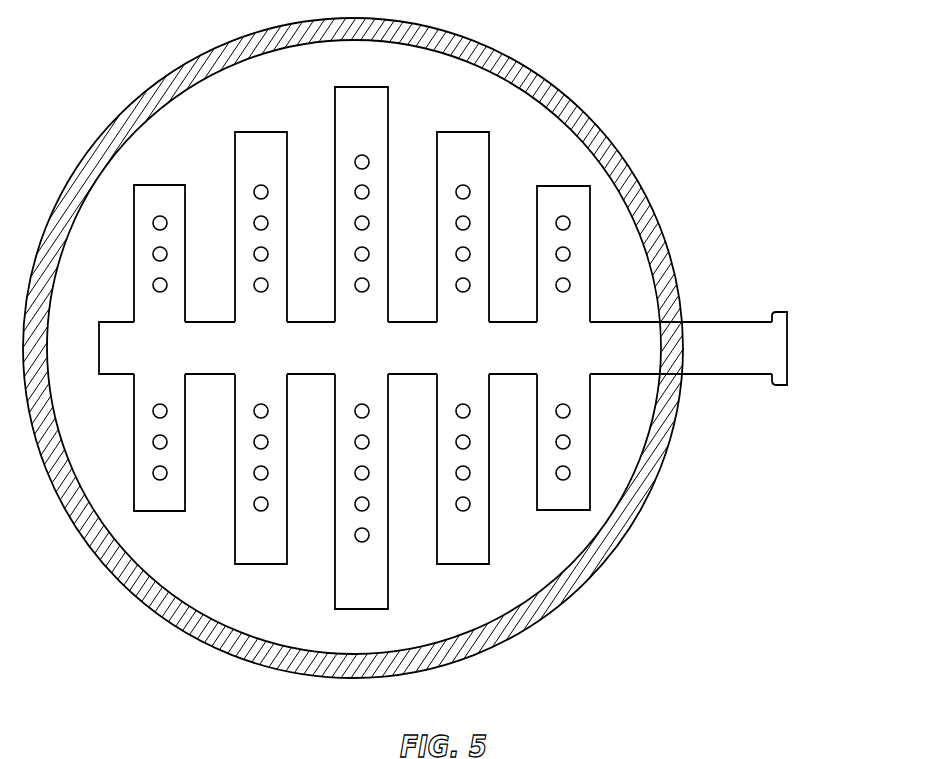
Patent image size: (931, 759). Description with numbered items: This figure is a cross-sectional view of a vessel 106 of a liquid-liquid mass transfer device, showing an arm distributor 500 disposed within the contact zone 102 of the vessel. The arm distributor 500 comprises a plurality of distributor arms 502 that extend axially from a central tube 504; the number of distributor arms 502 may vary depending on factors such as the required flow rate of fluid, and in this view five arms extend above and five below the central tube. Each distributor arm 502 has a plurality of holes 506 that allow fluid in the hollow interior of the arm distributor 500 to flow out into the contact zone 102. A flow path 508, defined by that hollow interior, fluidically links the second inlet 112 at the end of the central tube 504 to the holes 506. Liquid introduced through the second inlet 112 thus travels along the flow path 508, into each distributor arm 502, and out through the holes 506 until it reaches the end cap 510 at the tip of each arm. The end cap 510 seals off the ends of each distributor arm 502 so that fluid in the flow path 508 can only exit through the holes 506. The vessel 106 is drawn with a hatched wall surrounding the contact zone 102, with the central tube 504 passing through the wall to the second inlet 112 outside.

The contact zone 102 is at (572, 160).
The vessel 106 is at (575, 100).
The second inlet 112 is at (787, 348).
The arm distributor 500 is at (702, 322).
The distributor arm 502 is at (388, 112).
The central tube 504 is at (375, 365).
The holes 506 is at (261, 185).
The flow path 508 is at (700, 368).
The end cap 510 is at (362, 87).